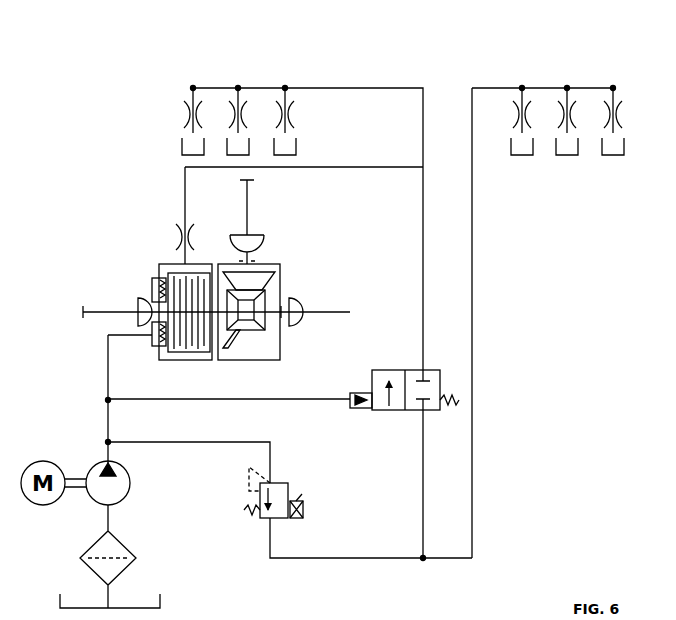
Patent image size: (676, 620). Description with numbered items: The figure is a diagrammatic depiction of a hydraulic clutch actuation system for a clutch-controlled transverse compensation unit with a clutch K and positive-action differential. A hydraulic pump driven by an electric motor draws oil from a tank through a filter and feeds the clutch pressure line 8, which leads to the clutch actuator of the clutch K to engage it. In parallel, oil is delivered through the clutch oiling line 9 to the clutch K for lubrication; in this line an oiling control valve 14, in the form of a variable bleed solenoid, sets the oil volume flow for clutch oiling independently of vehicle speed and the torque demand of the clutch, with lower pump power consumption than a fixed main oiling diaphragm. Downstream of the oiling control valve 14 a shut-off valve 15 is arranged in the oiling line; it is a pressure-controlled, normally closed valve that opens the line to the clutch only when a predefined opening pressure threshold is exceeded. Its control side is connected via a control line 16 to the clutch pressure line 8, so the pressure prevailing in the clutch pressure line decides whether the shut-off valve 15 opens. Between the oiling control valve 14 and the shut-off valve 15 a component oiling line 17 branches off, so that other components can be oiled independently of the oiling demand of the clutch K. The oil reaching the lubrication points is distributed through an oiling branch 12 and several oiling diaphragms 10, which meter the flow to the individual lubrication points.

The clutch pressure line 8 is at (108, 380).
The clutch oiling line 9 is at (185, 197).
The oiling diaphragm 10 is at (183, 113).
The oiling branch 12 is at (368, 88).
The oiling control valve 14 is at (237, 523).
The shut-off valve 15 is at (376, 423).
The control line 16 is at (303, 399).
The component oiling line 17 is at (472, 281).
The clutch K is at (136, 270).